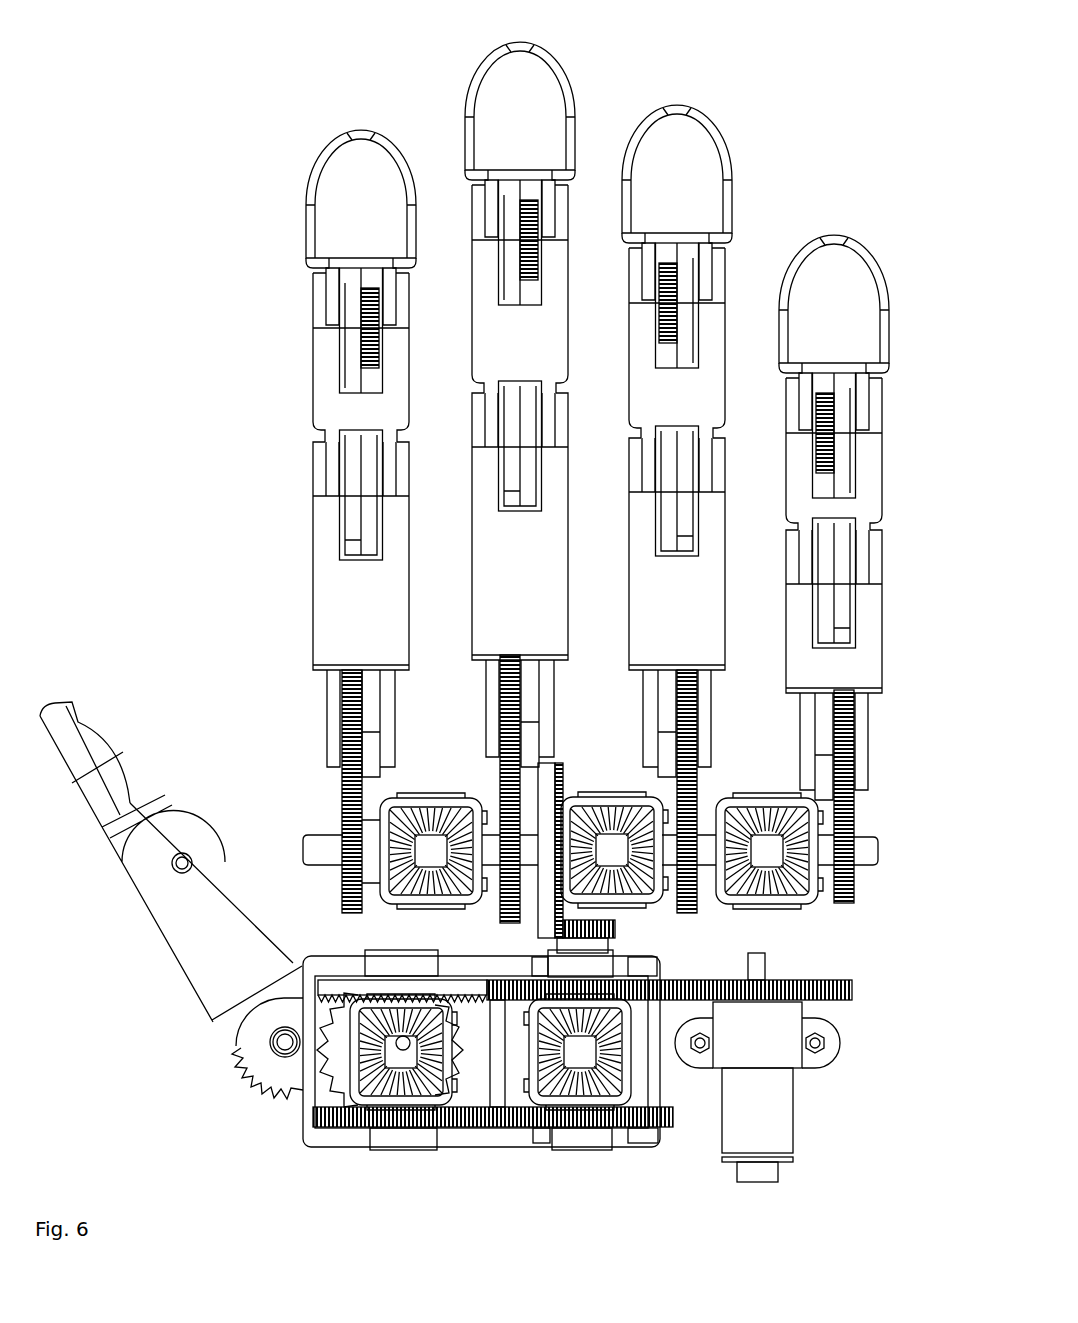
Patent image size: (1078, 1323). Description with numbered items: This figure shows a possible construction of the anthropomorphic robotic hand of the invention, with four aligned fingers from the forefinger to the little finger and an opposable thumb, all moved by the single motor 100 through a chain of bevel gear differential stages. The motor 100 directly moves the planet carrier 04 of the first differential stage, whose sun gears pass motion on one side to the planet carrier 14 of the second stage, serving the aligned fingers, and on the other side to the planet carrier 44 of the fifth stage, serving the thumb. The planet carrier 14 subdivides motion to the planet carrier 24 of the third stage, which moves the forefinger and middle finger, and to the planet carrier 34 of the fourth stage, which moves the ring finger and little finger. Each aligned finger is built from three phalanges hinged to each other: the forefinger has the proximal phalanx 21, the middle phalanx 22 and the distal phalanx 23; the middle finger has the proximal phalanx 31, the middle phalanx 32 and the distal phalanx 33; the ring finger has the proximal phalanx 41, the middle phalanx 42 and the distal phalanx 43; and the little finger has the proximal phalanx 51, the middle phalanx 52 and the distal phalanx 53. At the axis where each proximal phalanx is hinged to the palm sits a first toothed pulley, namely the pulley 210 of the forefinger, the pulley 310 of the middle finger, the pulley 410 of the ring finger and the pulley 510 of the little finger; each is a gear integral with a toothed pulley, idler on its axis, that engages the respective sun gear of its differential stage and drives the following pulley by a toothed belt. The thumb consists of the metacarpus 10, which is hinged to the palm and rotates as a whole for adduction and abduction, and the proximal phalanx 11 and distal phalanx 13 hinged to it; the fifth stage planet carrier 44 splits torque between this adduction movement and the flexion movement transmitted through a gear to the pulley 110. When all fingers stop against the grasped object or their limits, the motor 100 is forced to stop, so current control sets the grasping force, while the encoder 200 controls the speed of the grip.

The metacarpus 10 is at (296, 1002).
The proximal phalanx of the thumb 11 is at (240, 853).
The distal phalanx of the thumb 13 is at (70, 704).
The planet carrier of the second differential stage 14 is at (626, 797).
The proximal phalanx of the forefinger 21 is at (311, 447).
The middle phalanx of the forefinger 22 is at (311, 300).
The distal phalanx of the forefinger 23 is at (307, 150).
The planet carrier of the third differential stage 24 is at (408, 800).
The proximal phalanx of the middle finger 31 is at (568, 512).
The middle phalanx of the middle finger 32 is at (467, 300).
The distal phalanx of the middle finger 33 is at (479, 58).
The planet carrier of the fourth differential stage 34 is at (748, 800).
The proximal phalanx of the ring finger 41 is at (727, 520).
The middle phalanx of the ring finger 42 is at (727, 320).
The distal phalanx of the ring finger 43 is at (705, 110).
The planet carrier of the fifth differential stage 44 is at (332, 1095).
The proximal phalanx of the little finger 51 is at (884, 573).
The middle phalanx of the little finger 52 is at (886, 423).
The distal phalanx of the little finger 53 is at (878, 245).
The planet carrier of the first differential stage 04 is at (637, 1037).
The motor 100 is at (855, 995).
The pulley of the thumb 110 is at (228, 1075).
The encoder 200 is at (785, 1173).
The first toothed pulley of the forefinger 210 is at (343, 723).
The first toothed pulley of the middle finger 310 is at (502, 705).
The first toothed pulley of the ring finger 410 is at (697, 703).
The first toothed pulley of the little finger 510 is at (855, 743).